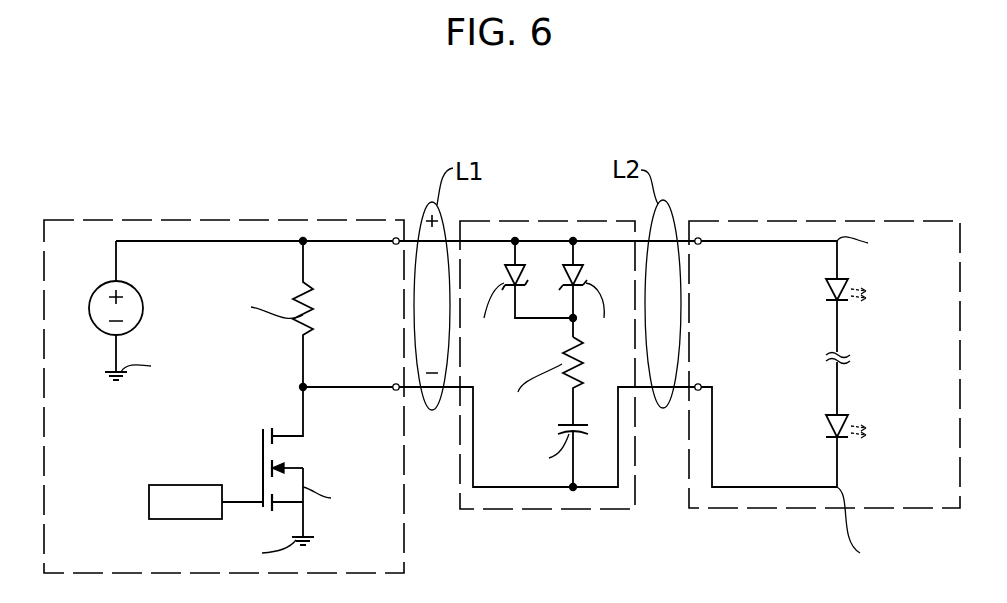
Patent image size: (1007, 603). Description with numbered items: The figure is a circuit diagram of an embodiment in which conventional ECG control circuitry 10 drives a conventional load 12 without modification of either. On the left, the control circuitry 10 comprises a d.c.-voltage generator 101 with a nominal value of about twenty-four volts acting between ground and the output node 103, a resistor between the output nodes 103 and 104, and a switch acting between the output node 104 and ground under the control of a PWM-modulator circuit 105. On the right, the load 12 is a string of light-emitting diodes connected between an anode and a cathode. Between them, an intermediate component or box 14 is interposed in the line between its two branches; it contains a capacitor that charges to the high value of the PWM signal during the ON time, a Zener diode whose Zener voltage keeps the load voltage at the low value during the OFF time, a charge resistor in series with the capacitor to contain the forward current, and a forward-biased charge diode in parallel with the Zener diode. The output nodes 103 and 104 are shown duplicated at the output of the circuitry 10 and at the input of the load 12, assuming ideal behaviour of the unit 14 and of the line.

The control circuitry 10 is at (200, 181).
The load 12 is at (872, 208).
The intermediate component 14 is at (572, 175).
The d.c.-voltage generator 101 is at (143, 297).
The output node 103 is at (394, 238).
The output node 104 is at (394, 391).
The PWM-modulator circuit 105 is at (148, 497).